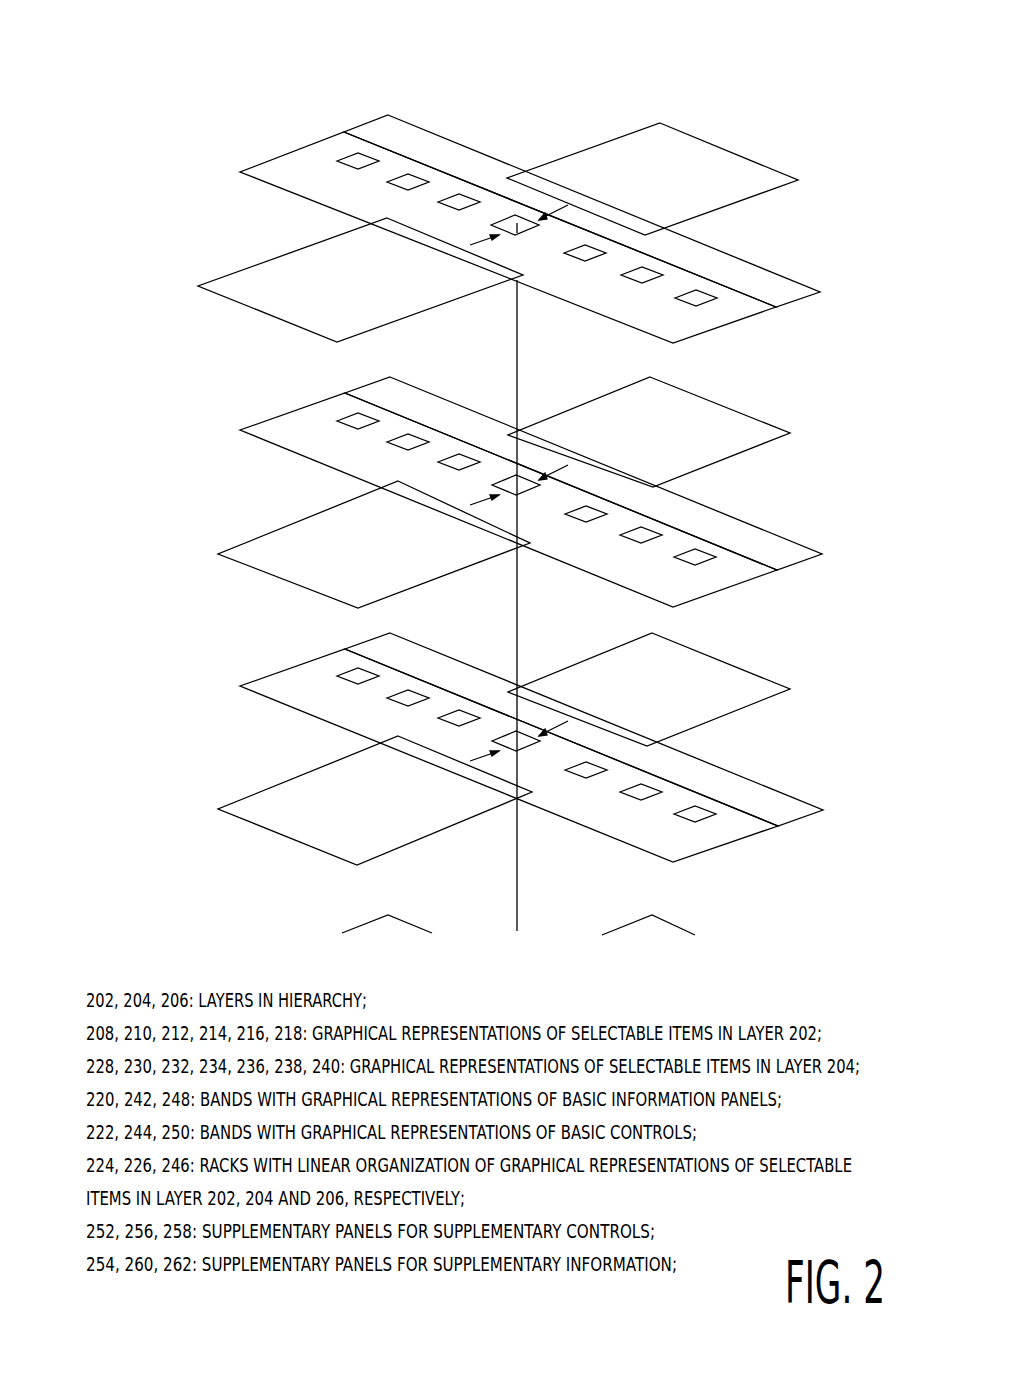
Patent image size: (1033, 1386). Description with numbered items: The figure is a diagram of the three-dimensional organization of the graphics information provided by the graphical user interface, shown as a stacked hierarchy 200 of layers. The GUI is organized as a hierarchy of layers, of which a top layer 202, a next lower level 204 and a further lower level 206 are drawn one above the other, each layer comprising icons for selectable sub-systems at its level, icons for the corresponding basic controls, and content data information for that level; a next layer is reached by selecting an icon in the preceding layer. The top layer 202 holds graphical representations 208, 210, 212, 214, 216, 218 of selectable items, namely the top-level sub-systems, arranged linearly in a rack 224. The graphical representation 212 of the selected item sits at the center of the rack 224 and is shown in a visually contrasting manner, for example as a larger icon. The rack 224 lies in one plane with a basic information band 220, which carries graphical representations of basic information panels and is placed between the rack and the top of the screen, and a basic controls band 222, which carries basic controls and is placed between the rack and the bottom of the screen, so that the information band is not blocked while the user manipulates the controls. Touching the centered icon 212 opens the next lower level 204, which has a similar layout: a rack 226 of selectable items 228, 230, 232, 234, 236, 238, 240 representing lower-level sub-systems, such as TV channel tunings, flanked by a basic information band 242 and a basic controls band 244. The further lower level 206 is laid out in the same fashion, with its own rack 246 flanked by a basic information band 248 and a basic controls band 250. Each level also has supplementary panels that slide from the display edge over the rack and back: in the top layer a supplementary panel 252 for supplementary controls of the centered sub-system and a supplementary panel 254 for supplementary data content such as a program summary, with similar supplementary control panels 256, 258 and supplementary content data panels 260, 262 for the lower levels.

The hierarchical display 200 is at (200, 947).
The top layer 202 is at (110, 242).
The next lower level 204 is at (110, 510).
The next lower level 206 is at (110, 761).
The graphical representation of selectable item 208 is at (410, 180).
The graphical representation of selectable item 210 is at (462, 200).
The graphical representation of selected item 212 is at (528, 222).
The graphical representation of selectable item 214 is at (595, 253).
The graphical representation of selectable item 216 is at (647, 277).
The graphical representation of selectable item 218 is at (700, 298).
The basic information band 220 is at (380, 108).
The basic controls band 222 is at (283, 148).
The rack 224 is at (778, 315).
The rack 226 is at (780, 577).
The selectable item 228 is at (360, 418).
The selectable item 230 is at (410, 438).
The selectable item 232 is at (460, 463).
The selectable item 234 is at (525, 483).
The selectable item 236 is at (590, 515).
The selectable item 238 is at (643, 535).
The selectable item 240 is at (702, 557).
The basic information band 242 is at (380, 373).
The basic controls band 244 is at (280, 408).
The rack with linear organization of graphical representations of selectable items i 246 is at (777, 833).
The band with graphical representations of basic information panels 248 is at (380, 627).
The band with graphical representations of basic controls 250 is at (278, 662).
The supplementary panel 252 is at (347, 290).
The supplementary panel 254 is at (633, 194).
The supplementary control panel 256 is at (362, 556).
The supplementary control panel 258 is at (360, 818).
The supplementary content data panel 260 is at (652, 433).
The supplementary content data panel 262 is at (632, 703).